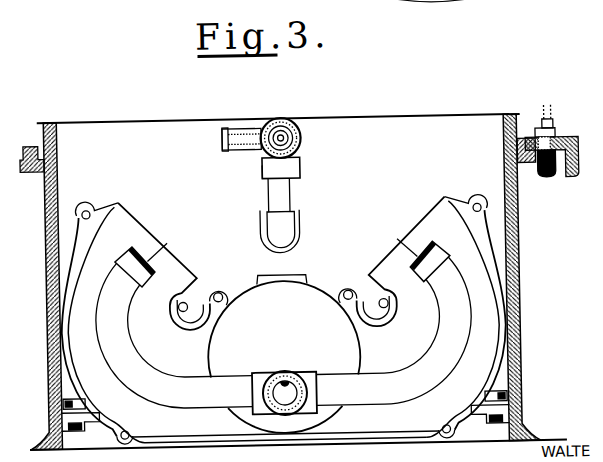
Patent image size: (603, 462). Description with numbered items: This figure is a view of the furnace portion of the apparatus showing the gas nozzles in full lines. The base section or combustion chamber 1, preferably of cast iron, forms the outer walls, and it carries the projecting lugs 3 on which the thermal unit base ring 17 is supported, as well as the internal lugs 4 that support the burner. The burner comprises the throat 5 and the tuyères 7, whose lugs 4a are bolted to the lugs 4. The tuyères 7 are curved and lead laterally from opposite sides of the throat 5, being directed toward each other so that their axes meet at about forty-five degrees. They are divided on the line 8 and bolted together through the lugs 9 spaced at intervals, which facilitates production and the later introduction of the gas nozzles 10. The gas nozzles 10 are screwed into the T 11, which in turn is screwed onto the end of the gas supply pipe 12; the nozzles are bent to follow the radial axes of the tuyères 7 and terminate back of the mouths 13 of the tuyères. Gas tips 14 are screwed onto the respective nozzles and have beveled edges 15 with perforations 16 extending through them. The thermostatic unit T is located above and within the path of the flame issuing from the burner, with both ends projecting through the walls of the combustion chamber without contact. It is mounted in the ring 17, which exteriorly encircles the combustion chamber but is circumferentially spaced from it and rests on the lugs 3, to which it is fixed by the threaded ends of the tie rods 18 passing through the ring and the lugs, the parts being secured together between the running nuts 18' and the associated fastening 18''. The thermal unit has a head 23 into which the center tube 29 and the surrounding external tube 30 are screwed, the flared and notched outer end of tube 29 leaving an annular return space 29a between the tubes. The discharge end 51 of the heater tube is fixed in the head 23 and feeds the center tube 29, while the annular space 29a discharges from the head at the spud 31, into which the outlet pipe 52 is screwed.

The base section or combustion chamber 1 is at (494, 201).
The projecting lugs 3 is at (34, 165).
The internal lugs 4 is at (485, 418).
The lugs 4a is at (538, 393).
The throat 5 is at (284, 354).
The tuyères 7 is at (58, 314).
The dividing line 8 is at (117, 199).
The lugs 9 is at (219, 289).
The gas nozzles 10 is at (126, 342).
The T 11 is at (303, 376).
The gas supply pipe 12 is at (281, 380).
The mouths 13 is at (144, 225).
The gas tips 14 is at (160, 248).
The beveled edges 15 is at (131, 245).
The perforations 16 is at (148, 277).
The thermal unit base ring 17 is at (33, 145).
The tie rods 18 is at (558, 107).
The running nuts 18' is at (566, 175).
The bolt shank 18'' is at (570, 120).
The head 23 is at (293, 128).
The center tube 29 is at (305, 138).
The annular return space 29a is at (264, 170).
The external tube 30 is at (278, 120).
The spud 31 is at (305, 168).
The discharge end of the heater tube 51 is at (247, 149).
The outlet pipe 52 is at (295, 197).
The thermostatic unit T is at (298, 120).